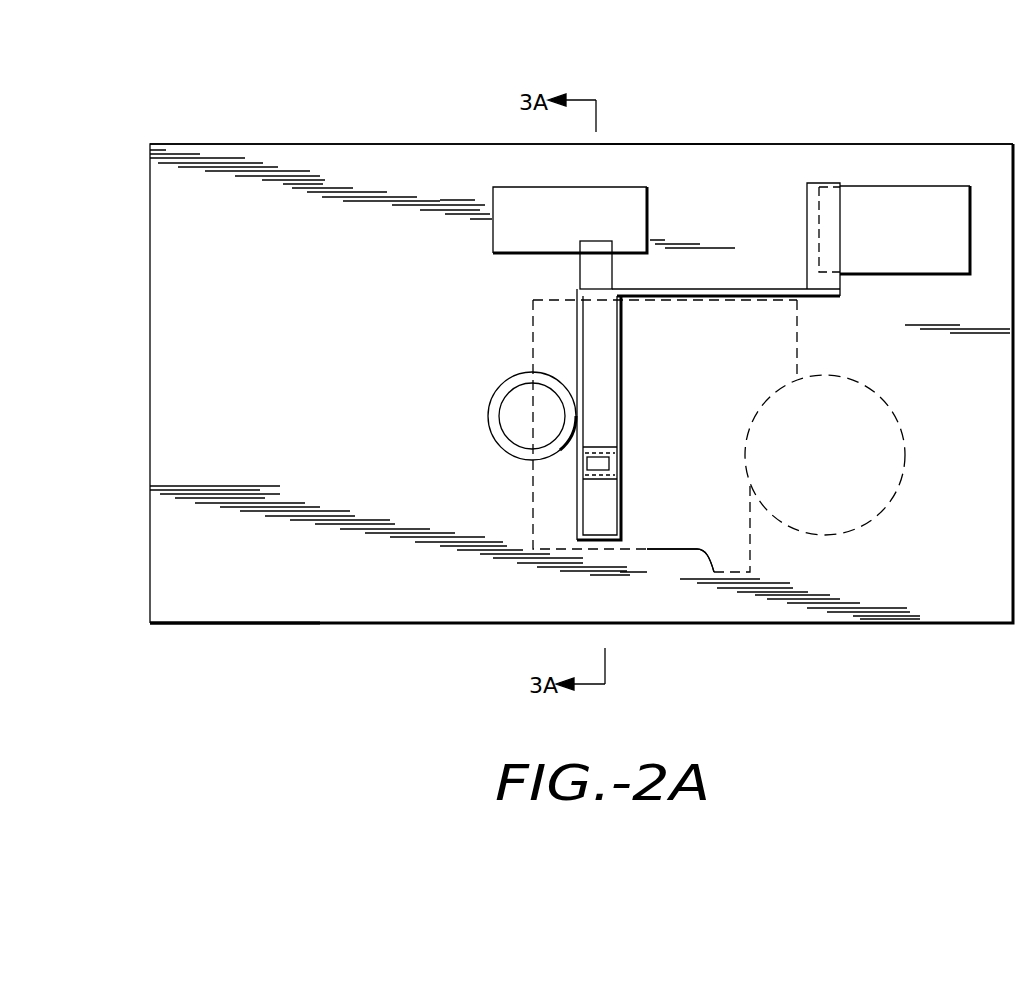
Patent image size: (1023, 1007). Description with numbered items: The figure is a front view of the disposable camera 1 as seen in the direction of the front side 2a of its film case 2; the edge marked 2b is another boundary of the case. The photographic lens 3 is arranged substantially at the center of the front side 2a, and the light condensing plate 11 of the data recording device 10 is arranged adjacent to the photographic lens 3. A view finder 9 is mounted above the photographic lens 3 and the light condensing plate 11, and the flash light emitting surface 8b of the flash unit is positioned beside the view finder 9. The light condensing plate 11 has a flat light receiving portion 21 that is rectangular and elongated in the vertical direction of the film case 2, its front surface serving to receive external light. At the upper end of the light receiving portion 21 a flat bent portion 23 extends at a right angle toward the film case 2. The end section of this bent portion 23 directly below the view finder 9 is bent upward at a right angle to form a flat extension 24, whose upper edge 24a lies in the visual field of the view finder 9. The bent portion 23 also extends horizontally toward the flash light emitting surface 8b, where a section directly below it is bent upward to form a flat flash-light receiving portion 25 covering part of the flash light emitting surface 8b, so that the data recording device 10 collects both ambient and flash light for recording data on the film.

The disposable camera 1 is at (789, 122).
The film case 2 is at (848, 623).
The front side 2a is at (370, 557).
The housing top wall 2b is at (681, 143).
The photographic lens 3 is at (512, 410).
The flash light emitting surface 8b is at (908, 205).
The view finder 9 is at (493, 218).
The data recording device 10 is at (658, 553).
The light condensing plate 11 is at (570, 352).
The light receiving portion 21 is at (603, 377).
The bent portion 23 is at (765, 288).
The extension 24 is at (610, 271).
The upper edge 24a is at (598, 240).
The flash-light receiving portion 25 is at (832, 283).